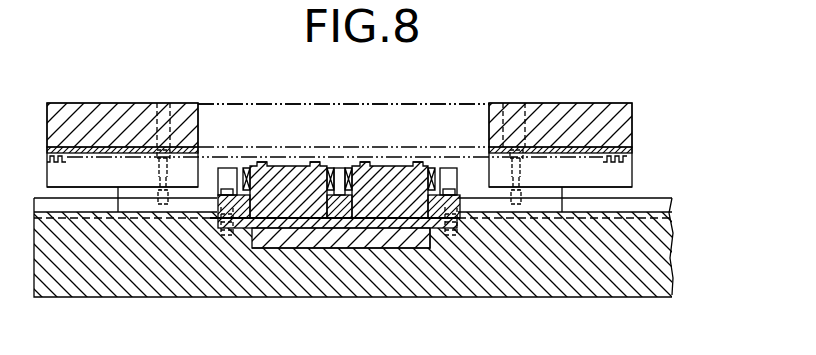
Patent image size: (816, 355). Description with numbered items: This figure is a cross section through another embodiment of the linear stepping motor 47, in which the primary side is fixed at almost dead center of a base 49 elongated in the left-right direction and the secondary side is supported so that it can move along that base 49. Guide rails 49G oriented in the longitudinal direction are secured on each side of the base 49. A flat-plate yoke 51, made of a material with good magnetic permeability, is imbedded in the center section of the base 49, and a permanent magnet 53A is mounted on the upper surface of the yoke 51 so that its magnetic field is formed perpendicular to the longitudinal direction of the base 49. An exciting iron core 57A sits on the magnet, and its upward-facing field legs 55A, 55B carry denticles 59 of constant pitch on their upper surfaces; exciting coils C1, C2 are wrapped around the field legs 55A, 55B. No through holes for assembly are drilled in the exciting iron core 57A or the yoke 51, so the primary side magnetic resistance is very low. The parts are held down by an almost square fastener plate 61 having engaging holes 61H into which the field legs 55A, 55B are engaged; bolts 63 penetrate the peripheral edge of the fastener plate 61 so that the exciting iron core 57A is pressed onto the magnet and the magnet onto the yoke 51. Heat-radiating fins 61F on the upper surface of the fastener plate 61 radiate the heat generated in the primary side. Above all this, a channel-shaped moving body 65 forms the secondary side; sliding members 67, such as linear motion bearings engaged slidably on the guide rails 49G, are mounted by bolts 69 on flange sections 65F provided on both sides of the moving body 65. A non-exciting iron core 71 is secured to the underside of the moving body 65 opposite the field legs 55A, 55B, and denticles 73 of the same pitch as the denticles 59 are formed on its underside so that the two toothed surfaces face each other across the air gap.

The linear stepping motor 47 is at (637, 95).
The base 49 is at (655, 275).
The guide rails 49G is at (653, 203).
The yoke 51 is at (427, 248).
The permanent magnet 53A is at (312, 222).
The field leg 55A is at (285, 175).
The field leg 55B is at (397, 175).
The exciting iron core 57A is at (362, 228).
The denticles 59 is at (312, 163).
The fastener plate 61 is at (443, 198).
The heat-radiating fins 61F is at (478, 200).
The engaging holes 61H is at (245, 222).
The bolts 63 is at (470, 215).
The moving body 65 is at (585, 112).
The flange sections 65F is at (628, 178).
The sliding members 67 is at (583, 215).
The bolts 69 is at (513, 150).
The non-exciting iron core 71 is at (540, 152).
The denticles 73 is at (620, 163).
The exciting coil C1 is at (246, 166).
The exciting coil C2 is at (432, 168).